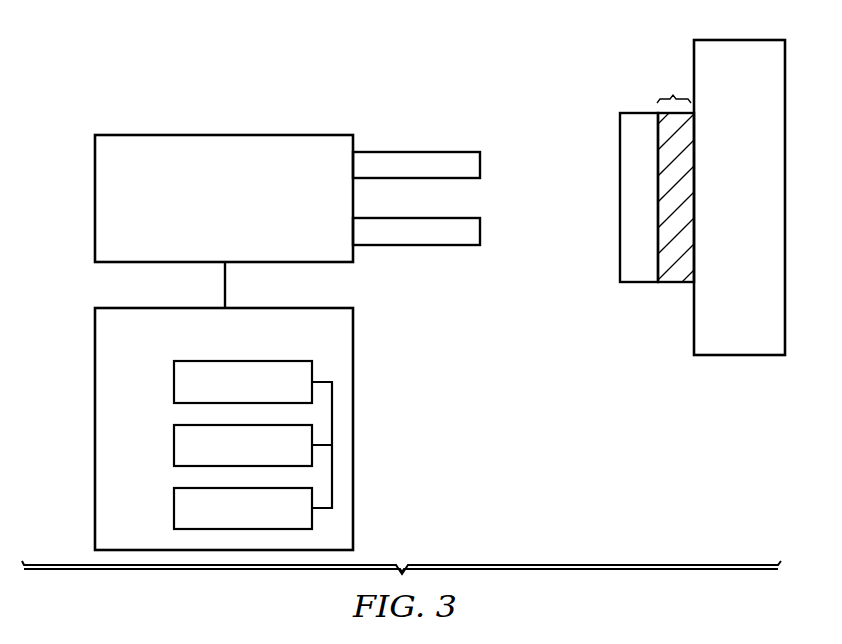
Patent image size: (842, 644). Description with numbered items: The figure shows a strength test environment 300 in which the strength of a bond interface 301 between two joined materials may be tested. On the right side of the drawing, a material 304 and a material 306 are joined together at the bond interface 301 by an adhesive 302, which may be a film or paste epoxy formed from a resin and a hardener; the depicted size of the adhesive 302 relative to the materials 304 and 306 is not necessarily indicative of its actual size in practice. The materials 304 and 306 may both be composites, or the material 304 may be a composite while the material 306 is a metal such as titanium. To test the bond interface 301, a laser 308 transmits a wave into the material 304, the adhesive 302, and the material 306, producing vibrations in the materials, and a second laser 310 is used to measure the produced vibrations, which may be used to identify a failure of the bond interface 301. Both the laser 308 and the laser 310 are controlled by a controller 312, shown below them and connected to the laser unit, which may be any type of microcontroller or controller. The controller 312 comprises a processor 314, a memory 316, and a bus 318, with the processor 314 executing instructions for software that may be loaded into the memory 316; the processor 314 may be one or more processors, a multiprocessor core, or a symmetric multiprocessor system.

The strength test environment 300 is at (277, 72).
The bond interface 301 is at (673, 94).
The adhesive 302 is at (671, 283).
The material 304 is at (632, 113).
The material 306 is at (737, 356).
The laser 308 is at (417, 152).
The laser 310 is at (418, 246).
The controller 312 is at (93, 400).
The processor 314 is at (174, 383).
The memory 316 is at (174, 445).
The bus 318 is at (174, 506).